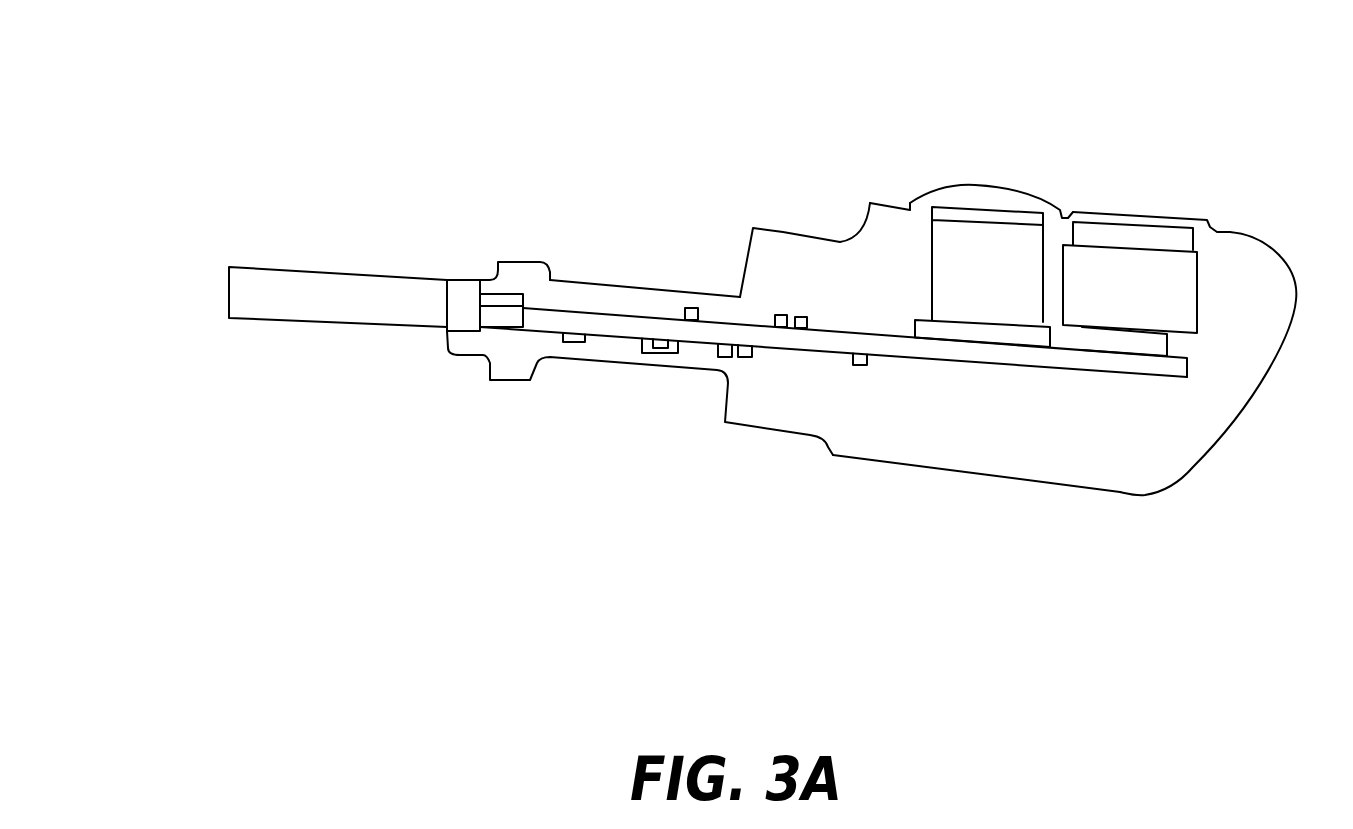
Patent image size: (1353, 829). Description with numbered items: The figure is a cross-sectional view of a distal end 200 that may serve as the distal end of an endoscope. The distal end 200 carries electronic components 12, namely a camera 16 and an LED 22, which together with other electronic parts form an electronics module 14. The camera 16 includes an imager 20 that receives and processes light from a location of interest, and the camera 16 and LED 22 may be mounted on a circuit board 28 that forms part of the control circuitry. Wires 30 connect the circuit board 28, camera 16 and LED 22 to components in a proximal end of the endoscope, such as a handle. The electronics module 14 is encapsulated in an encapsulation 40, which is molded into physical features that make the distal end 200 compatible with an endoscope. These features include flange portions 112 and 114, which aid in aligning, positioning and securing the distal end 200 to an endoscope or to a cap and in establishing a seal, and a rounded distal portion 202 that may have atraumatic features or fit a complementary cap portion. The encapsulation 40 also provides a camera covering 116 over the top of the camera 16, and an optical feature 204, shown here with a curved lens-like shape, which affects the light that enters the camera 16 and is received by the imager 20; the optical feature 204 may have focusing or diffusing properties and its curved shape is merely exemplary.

The distal end 200 is at (201, 184).
The wires 30 is at (509, 294).
The flange portion 114 is at (538, 262).
The camera covering 116 is at (651, 243).
The flange portion 112 is at (785, 232).
The camera 16 is at (930, 290).
The optical feature 204 is at (990, 185).
The electronic components 12 is at (1077, 167).
The LED 22 is at (1200, 283).
The rounded distal portion 202 is at (1255, 402).
The electronics module 14 is at (1049, 401).
The encapsulation 40 is at (993, 478).
The imager 20 is at (930, 360).
The circuit board 28 is at (887, 357).